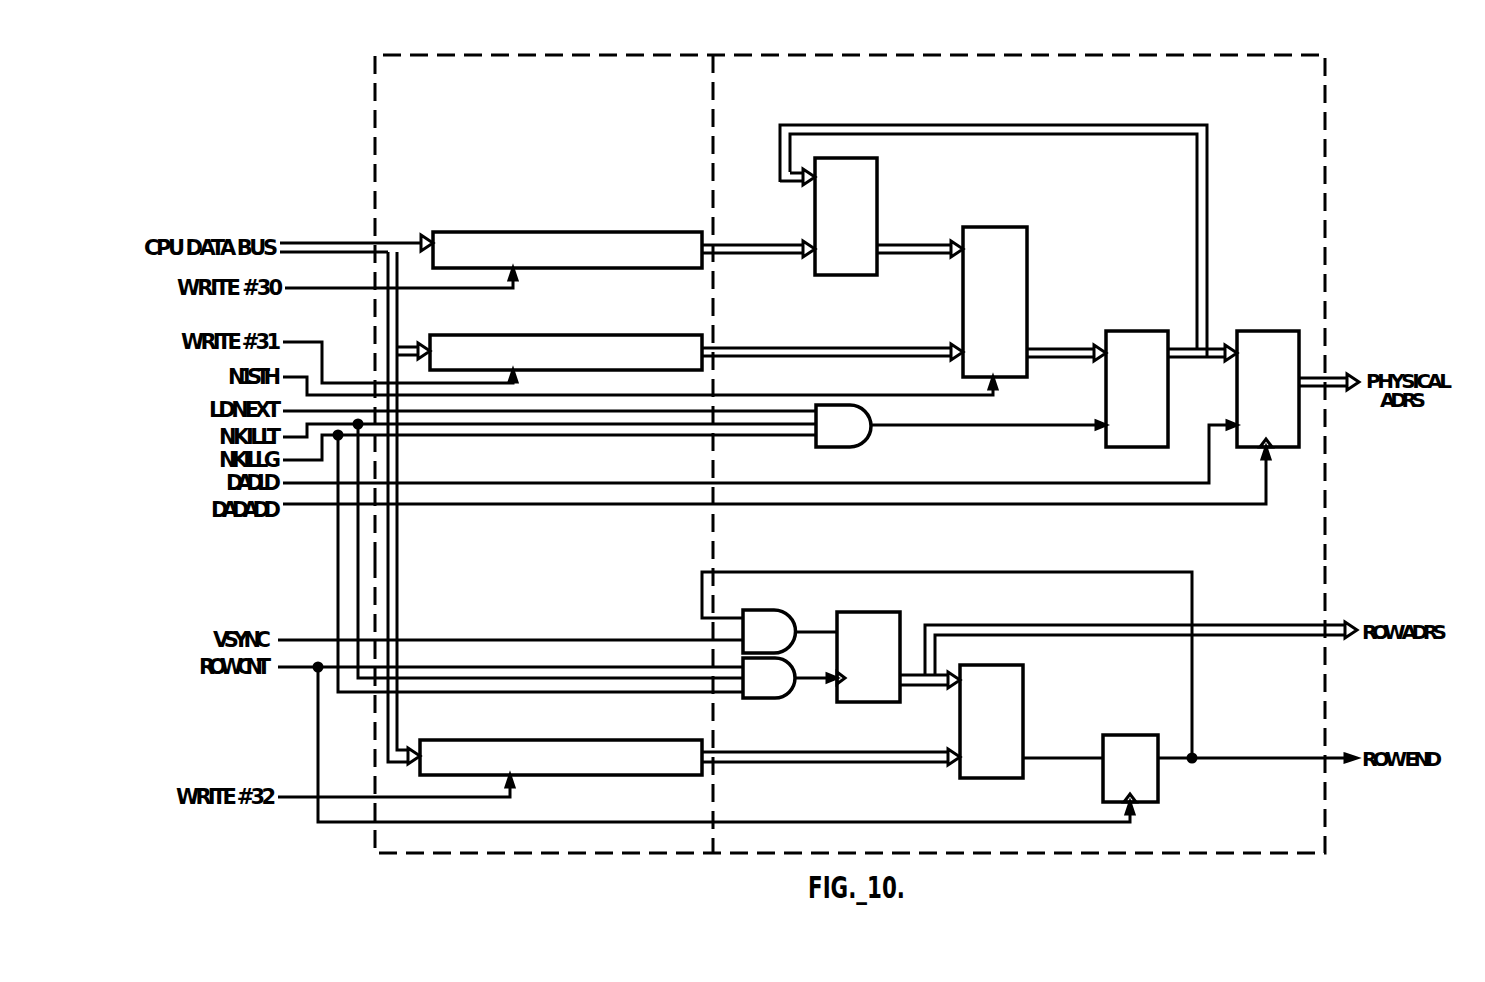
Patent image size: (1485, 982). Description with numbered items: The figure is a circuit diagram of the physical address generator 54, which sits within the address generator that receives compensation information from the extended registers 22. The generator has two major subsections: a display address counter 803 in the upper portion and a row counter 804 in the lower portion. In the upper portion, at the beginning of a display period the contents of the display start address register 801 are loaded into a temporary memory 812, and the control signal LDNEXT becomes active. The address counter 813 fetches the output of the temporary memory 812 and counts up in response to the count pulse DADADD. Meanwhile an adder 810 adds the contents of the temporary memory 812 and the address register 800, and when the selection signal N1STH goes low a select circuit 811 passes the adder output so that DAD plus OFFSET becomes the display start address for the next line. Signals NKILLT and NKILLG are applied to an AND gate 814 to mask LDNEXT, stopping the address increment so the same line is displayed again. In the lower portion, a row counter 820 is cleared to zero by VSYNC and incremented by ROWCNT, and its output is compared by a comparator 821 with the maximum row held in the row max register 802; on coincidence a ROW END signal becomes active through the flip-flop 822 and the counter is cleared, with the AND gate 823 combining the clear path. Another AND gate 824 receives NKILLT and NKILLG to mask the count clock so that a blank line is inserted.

The extended registers 22 is at (676, 101).
The physical address generator 54 is at (1035, 101).
The address register 800 is at (652, 232).
The display start address register 801 is at (650, 335).
The row max register 802 is at (638, 740).
The display address counter 803 is at (1312, 110).
The row counter 804 is at (1308, 600).
The adder 810 is at (877, 170).
The select circuit 811 is at (1012, 227).
The temporary memory 812 is at (1134, 331).
The address counter 813 is at (1248, 331).
The AND gate 814 is at (862, 443).
The row counter 820 is at (890, 612).
The comparator 821 is at (1020, 665).
The row end flip-flop 822 is at (1128, 735).
The AND gate 823 is at (795, 612).
The AND gate 824 is at (786, 698).